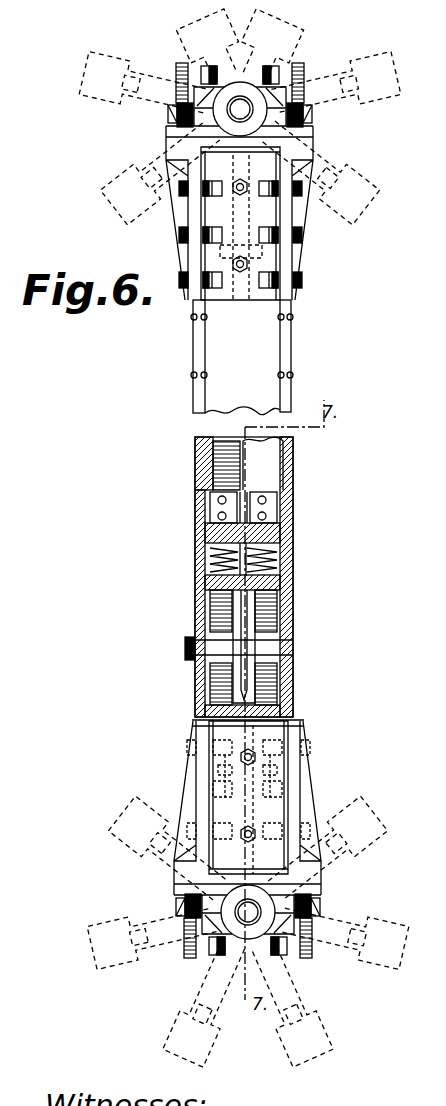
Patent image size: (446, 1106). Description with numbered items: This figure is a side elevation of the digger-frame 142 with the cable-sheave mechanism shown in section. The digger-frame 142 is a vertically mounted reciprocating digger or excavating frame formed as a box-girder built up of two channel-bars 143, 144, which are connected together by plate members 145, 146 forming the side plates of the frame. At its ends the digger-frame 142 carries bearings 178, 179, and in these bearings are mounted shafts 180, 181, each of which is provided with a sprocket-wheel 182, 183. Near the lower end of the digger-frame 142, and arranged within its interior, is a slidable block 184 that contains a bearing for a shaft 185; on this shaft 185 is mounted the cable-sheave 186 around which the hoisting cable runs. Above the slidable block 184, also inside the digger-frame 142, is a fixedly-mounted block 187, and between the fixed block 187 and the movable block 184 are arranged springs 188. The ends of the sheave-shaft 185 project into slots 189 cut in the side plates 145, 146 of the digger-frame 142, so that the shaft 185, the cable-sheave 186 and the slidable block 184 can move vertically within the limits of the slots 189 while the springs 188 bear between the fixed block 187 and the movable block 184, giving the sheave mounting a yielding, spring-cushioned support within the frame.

The digger-frame 142 is at (196, 440).
The channel-bar 143 is at (266, 402).
The channel-bar 144 is at (264, 466).
The plate member 145 is at (292, 350).
The plate member 146 is at (194, 352).
The bearing 178 is at (232, 87).
The bearing 179 is at (243, 932).
The shaft 180 is at (241, 106).
The shaft 181 is at (253, 928).
The sprocket-wheel 182 is at (334, 151).
The sprocket-wheel 183 is at (347, 956).
The slidable block 184 is at (291, 623).
The shaft 185 is at (275, 648).
The cable-sheave 186 is at (246, 615).
The fixedly-mounted block 187 is at (293, 508).
The springs 188 is at (290, 548).
The slots 189 is at (290, 613).